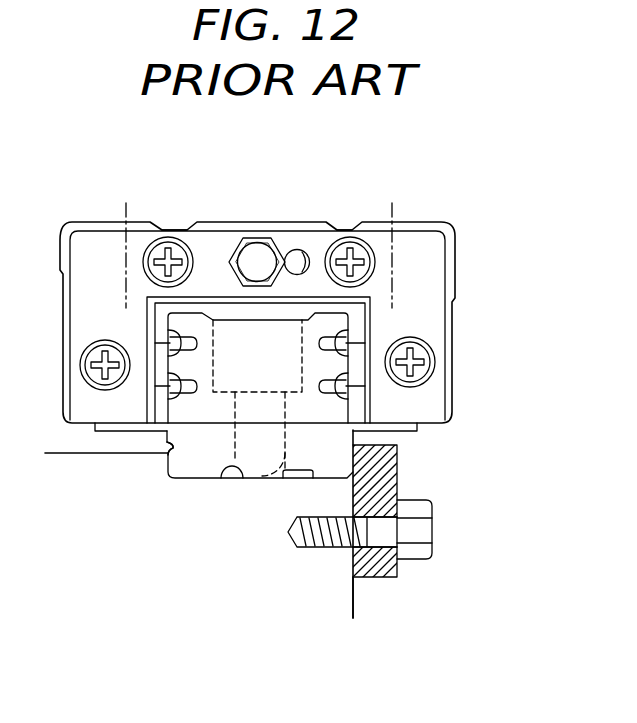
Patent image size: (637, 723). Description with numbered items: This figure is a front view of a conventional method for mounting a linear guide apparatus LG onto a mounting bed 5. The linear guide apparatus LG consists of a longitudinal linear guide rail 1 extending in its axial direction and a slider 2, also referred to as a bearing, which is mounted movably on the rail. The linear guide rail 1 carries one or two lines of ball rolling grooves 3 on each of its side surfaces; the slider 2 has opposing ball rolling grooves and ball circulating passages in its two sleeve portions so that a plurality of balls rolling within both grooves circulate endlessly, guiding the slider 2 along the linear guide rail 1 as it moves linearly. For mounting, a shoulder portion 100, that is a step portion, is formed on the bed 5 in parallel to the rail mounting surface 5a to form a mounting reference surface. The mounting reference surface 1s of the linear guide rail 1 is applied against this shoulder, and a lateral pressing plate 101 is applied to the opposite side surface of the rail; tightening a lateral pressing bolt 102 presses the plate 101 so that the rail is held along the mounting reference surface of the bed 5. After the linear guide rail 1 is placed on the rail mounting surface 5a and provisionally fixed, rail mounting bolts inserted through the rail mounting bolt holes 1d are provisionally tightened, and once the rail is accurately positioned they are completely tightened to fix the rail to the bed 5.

The slider 2 is at (421, 250).
The linear guide apparatus LG is at (466, 243).
The ball rolling grooves 3 is at (348, 384).
The linear guide rail 1 is at (190, 453).
The mounting reference surface 1s is at (163, 462).
The rail mounting bolt holes 1d is at (265, 482).
The rail mounting surface 5a is at (190, 452).
The shoulder portion 100 is at (117, 455).
The lateral pressing plate 101 is at (400, 464).
The lateral pressing bolt 102 is at (427, 553).
The bed 5 is at (353, 597).